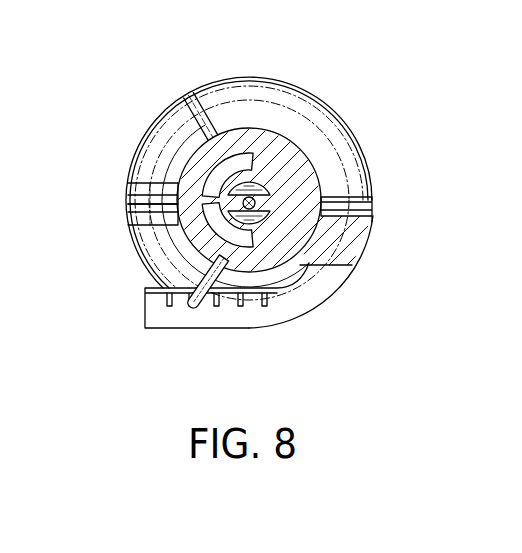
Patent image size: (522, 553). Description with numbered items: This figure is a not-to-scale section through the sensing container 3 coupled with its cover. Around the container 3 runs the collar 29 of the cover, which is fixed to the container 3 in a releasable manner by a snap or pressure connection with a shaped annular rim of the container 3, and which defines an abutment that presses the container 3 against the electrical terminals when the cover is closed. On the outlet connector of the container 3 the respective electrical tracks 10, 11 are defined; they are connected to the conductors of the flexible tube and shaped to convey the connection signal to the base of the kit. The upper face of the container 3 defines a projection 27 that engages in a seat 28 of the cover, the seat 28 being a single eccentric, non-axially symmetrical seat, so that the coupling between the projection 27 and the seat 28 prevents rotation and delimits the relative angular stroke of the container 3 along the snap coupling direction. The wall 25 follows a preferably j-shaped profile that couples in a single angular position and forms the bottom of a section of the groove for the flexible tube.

The sensing container 3 is at (251, 118).
The collar 29 is at (327, 104).
The electrical track 11 is at (128, 188).
The electrical track 10 is at (128, 219).
The projection 27 is at (190, 291).
The seat 28 is at (206, 314).
The wall 25 is at (326, 294).